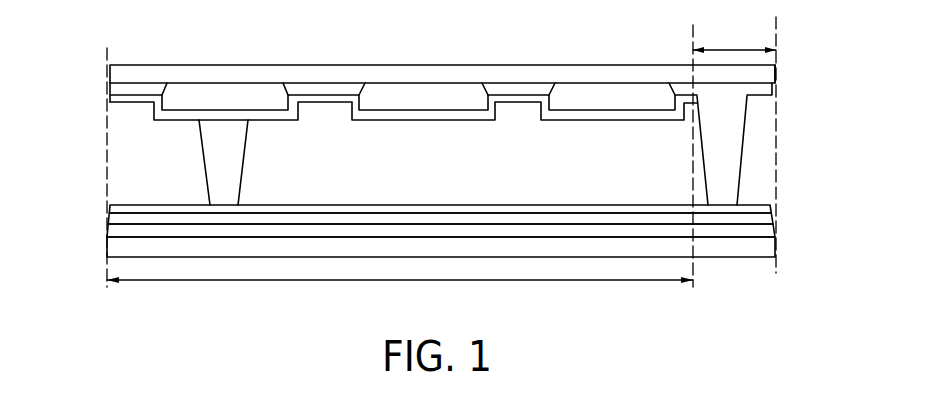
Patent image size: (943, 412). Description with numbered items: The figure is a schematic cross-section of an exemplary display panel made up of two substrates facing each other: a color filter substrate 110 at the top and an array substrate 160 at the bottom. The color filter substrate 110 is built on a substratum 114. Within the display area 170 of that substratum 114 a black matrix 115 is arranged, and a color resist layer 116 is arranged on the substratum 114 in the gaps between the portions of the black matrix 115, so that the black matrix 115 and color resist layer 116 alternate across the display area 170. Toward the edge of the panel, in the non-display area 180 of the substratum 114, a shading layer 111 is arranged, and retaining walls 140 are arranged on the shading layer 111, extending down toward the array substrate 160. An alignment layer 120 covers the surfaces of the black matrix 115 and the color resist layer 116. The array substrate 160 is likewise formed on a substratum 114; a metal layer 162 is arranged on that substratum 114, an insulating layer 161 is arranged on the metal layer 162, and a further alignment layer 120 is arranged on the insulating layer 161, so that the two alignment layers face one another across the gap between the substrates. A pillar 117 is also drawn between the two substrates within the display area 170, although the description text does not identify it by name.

The color filter substrate 110 is at (100, 66).
The shading layer 111 is at (758, 78).
The substratum 114 is at (138, 73).
The black matrix 115 is at (320, 92).
The color resist layer 116 is at (430, 98).
The conductive pillar 117 is at (231, 163).
The alignment layer 120 is at (603, 117).
The retaining walls 140 is at (738, 153).
The array substrate 160 is at (102, 202).
The insulating layer 161 is at (753, 219).
The metal layer 162 is at (753, 235).
The display area 170 is at (400, 271).
The non-display area 180 is at (734, 37).